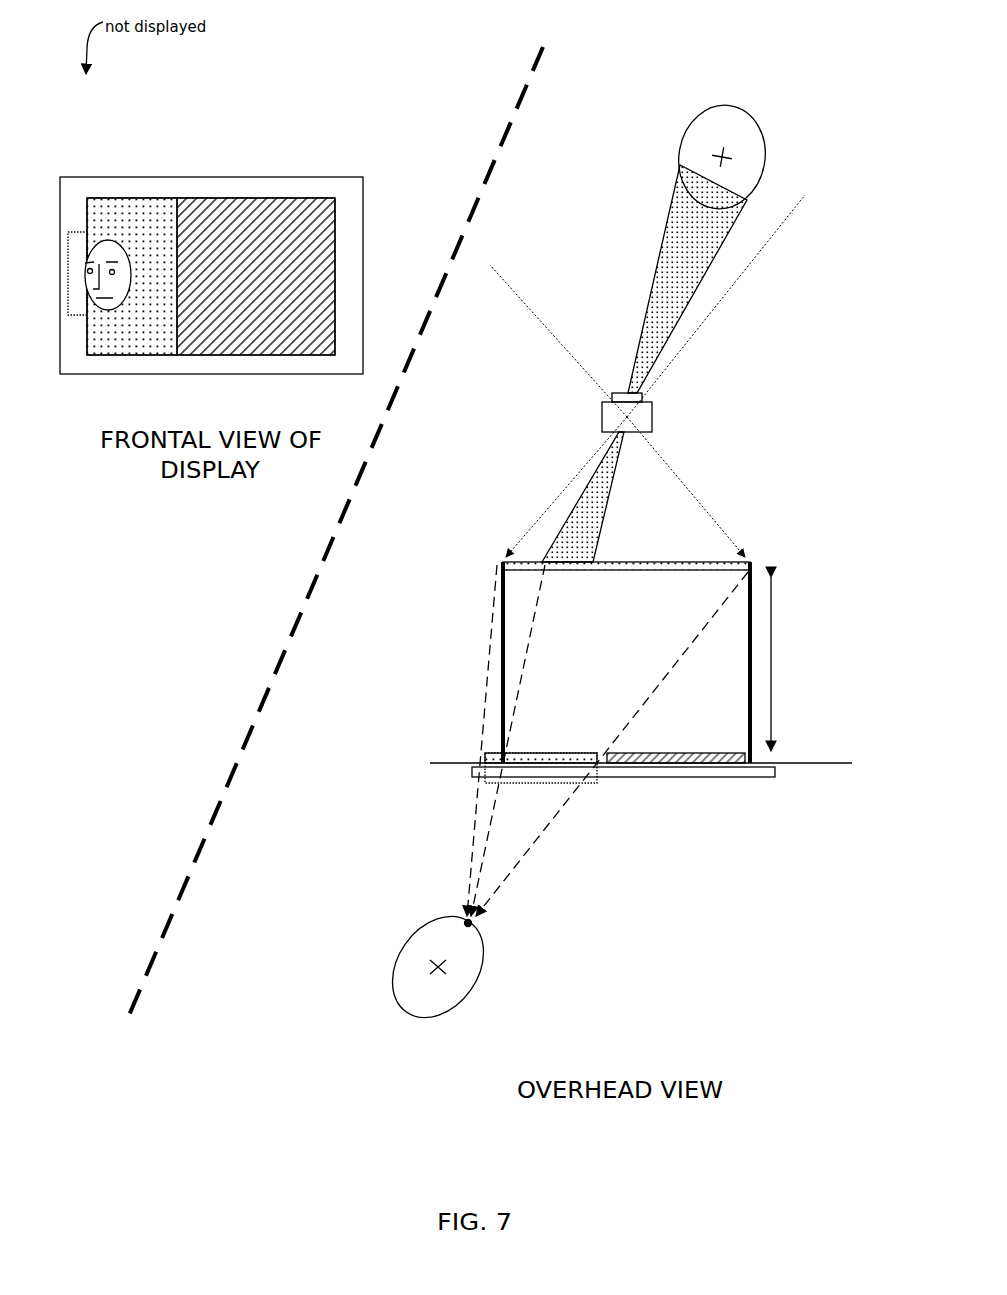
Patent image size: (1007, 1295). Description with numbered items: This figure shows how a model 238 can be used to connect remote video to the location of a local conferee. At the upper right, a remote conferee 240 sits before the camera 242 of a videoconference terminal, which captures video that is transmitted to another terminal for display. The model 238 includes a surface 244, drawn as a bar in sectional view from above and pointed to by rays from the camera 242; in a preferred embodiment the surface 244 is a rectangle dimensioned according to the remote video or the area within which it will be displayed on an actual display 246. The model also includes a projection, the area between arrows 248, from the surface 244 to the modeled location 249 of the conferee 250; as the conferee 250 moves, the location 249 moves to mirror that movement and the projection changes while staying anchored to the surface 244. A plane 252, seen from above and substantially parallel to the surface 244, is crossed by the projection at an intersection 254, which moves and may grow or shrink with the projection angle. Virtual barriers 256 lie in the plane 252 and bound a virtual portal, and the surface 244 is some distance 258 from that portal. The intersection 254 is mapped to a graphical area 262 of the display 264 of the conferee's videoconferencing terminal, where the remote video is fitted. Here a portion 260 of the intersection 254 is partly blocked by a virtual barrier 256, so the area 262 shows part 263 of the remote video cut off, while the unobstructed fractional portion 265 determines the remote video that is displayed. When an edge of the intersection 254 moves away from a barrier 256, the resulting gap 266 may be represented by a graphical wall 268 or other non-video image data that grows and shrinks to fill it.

The model 238 is at (722, 913).
The remote conferee 240 is at (108, 241).
The camera 242 is at (655, 410).
The surface 244 is at (800, 556).
The actual display 246 is at (468, 790).
The arrows 248 is at (470, 877).
The modeled location 249 is at (472, 924).
The conferee 250 is at (485, 978).
The plane 252 is at (828, 763).
The intersection 254 is at (545, 790).
The virtual barriers 256 is at (500, 640).
The distance 258 is at (780, 668).
The portion 260 is at (485, 755).
The graphical area 262 is at (137, 330).
The part 263 is at (77, 232).
The display 264 is at (196, 177).
The fractional portion 265 is at (532, 755).
The gap 266 is at (720, 763).
The graphical wall 268 is at (268, 200).